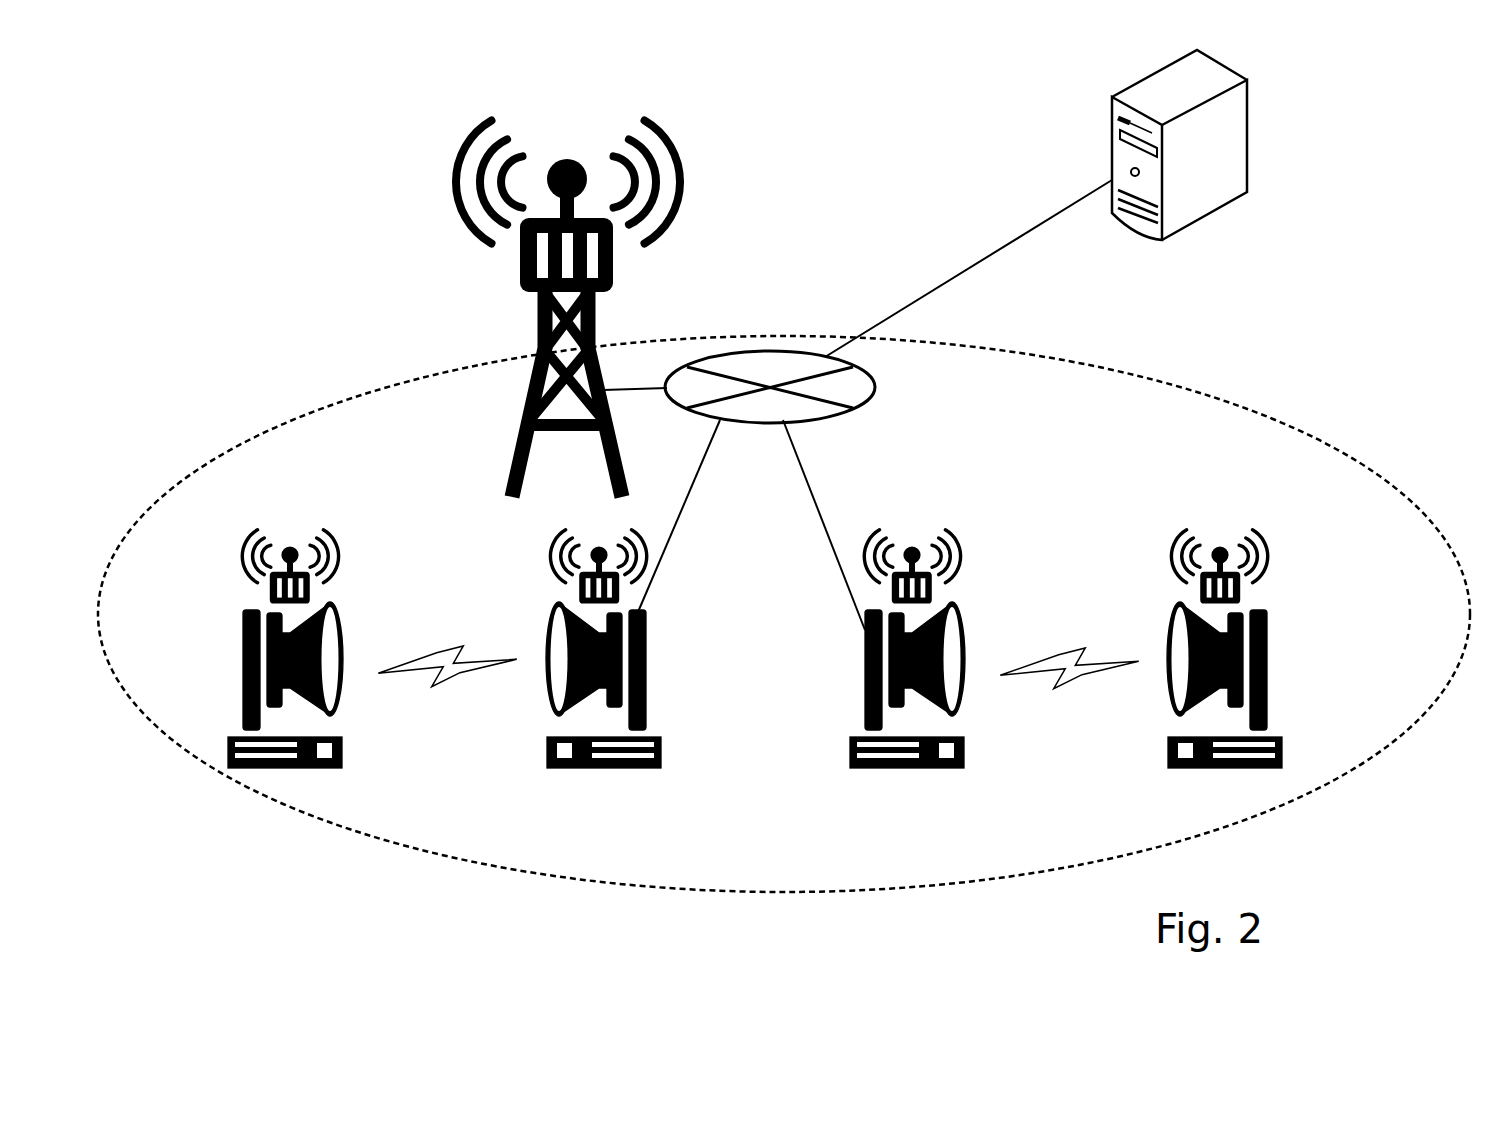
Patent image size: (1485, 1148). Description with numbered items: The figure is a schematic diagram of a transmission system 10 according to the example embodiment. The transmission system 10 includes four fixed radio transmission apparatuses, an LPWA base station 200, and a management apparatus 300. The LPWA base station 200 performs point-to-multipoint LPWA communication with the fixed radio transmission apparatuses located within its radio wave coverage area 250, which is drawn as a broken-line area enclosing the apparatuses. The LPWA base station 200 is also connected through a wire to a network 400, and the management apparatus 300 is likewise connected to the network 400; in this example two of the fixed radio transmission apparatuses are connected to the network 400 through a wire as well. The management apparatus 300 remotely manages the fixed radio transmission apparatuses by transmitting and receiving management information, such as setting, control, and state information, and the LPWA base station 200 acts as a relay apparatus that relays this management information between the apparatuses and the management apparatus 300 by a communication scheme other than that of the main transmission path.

The transmission system 10 is at (768, 954).
The LPWA base station 200 is at (520, 269).
The radio wave coverage area 250 is at (1252, 405).
The management apparatus 300 is at (1247, 138).
The network 400 is at (762, 352).